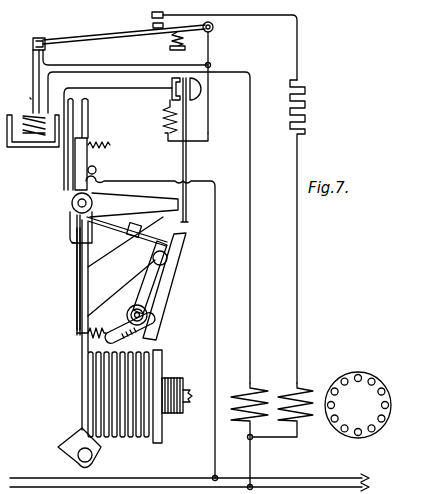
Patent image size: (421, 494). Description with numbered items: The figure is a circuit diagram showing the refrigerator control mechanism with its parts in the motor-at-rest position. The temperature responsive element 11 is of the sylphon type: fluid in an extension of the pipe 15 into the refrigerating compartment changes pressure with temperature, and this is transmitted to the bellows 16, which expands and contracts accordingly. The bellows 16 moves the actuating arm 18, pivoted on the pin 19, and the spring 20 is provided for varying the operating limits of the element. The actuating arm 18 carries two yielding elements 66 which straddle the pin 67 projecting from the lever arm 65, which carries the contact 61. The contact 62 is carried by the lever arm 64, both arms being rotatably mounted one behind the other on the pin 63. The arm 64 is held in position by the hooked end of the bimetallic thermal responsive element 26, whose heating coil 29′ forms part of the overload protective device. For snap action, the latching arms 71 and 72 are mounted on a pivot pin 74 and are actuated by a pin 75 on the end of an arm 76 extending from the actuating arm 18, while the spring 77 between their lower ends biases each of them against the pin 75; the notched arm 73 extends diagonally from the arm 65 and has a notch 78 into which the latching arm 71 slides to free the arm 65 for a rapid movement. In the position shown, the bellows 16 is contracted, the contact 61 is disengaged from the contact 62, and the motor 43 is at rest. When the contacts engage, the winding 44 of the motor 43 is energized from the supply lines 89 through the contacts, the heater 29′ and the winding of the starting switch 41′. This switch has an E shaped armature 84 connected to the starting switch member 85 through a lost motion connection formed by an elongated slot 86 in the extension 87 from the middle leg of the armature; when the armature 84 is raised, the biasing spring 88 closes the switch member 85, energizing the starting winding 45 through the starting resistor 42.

The starting switch member 85 is at (115, 32).
The elongated slot 86 is at (33, 44).
The extension 87 is at (33, 63).
The biasing spring 88 is at (171, 42).
The electroresponsive starting switch 41′ is at (27, 99).
The E shaped movable armature 84 is at (33, 148).
The movable contact 61 is at (75, 99).
The movable contact 62 is at (88, 113).
The heating coil 29′ is at (166, 127).
The bimetallic thermal responsive element 26 is at (190, 157).
The starting resistor 42 is at (306, 102).
The pin 63 is at (72, 204).
The lever arm 64 is at (134, 205).
The lever arm 65 is at (71, 229).
The yielding elements 66 is at (78, 293).
The pin 67 is at (72, 246).
The latching arm 71 is at (152, 246).
The latching arm 72 is at (190, 241).
The notched arm 73 is at (128, 234).
The pivot pin 74 is at (148, 316).
The pin 75 is at (168, 260).
The arm 76 is at (125, 266).
The spring 77 is at (140, 335).
The notch 78 is at (166, 240).
The spring 20 is at (98, 322).
The actuating arm 18 is at (82, 382).
The temperature responsive element 11 is at (163, 378).
The pipe 15 is at (190, 403).
The sylphon bellows 16 is at (141, 438).
The pin 19 is at (92, 456).
The winding 44 is at (263, 386).
The starting winding 45 is at (310, 386).
The refrigerator compressor driving motor 43 is at (358, 405).
The supply lines 89 is at (200, 484).